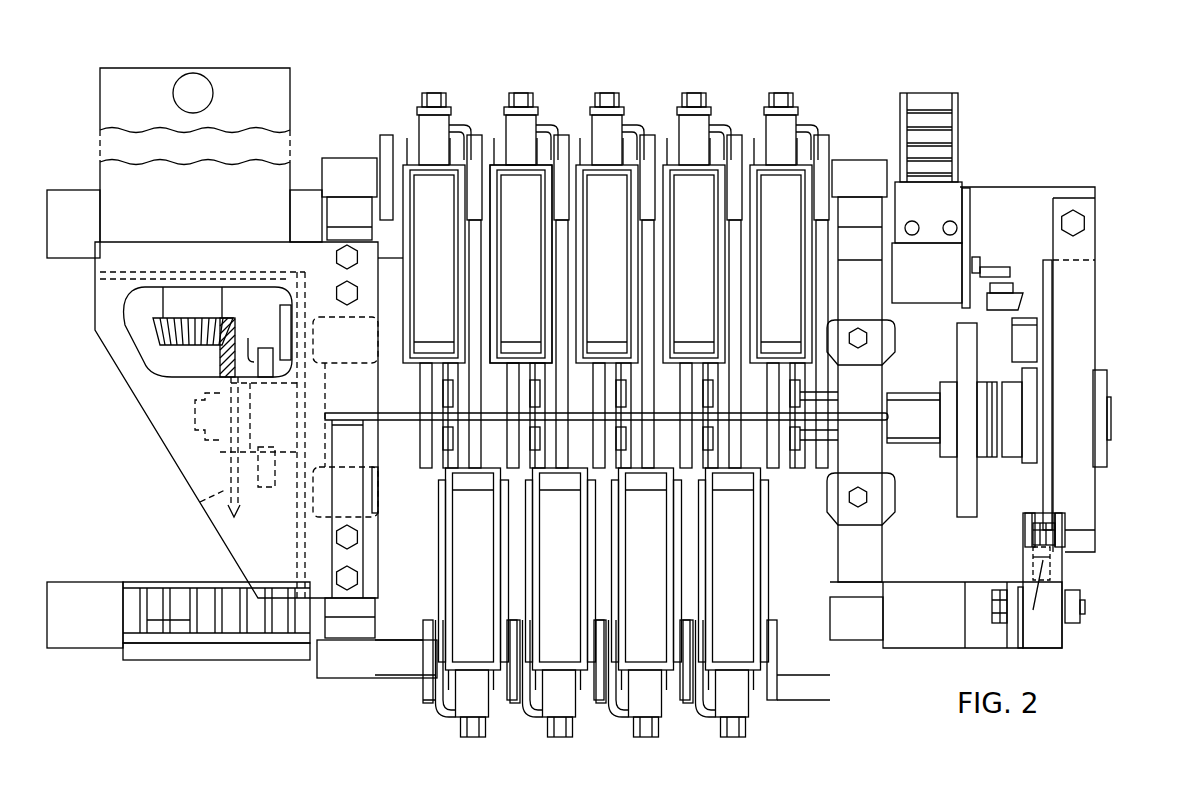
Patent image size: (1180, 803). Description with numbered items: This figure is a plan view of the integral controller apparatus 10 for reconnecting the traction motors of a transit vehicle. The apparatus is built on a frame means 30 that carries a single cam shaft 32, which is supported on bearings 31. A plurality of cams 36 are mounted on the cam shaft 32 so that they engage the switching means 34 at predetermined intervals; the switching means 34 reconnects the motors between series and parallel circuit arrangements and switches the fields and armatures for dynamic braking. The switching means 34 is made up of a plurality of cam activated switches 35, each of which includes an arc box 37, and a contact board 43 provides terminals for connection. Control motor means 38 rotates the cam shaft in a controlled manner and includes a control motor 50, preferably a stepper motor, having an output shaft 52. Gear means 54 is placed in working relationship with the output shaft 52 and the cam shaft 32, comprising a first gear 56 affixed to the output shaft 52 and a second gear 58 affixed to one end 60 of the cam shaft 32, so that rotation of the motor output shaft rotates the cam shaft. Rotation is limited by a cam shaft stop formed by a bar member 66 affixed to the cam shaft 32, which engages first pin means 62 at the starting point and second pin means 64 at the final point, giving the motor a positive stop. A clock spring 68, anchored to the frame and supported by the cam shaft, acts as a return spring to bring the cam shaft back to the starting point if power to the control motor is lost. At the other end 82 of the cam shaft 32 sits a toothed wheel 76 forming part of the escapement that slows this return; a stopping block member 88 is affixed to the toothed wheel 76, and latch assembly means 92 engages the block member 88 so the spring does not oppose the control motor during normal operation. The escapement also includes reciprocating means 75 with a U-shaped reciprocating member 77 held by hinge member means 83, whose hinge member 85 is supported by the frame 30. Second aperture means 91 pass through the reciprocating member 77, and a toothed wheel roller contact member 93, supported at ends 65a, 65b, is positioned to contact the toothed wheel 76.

The controller apparatus 10 is at (1165, 423).
The frame means 30 is at (886, 554).
The bearings 31 is at (890, 378).
The cam shaft 32 is at (908, 398).
The switching means 34 is at (535, 132).
The cam activated switches 35 is at (402, 135).
The cams 36 is at (425, 503).
The arc box 37 is at (543, 168).
The control motor means 38 is at (306, 108).
The contact board 43 is at (825, 148).
The control motor 50 is at (100, 108).
The output shaft 52 is at (212, 300).
The gear means 54 is at (155, 338).
The first gear 56 is at (204, 340).
The second gear 58 is at (200, 503).
The one end of the cam shaft 60 is at (216, 450).
The first pin means 62 is at (260, 349).
The second pin means 64 is at (264, 491).
The end 65a is at (1031, 512).
The end 65b is at (1059, 512).
The bar member 66 is at (288, 295).
The clock spring 68 is at (1093, 316).
The reciprocating means 75 is at (1058, 580).
The toothed wheel 76 is at (1020, 282).
The reciprocating member 77 is at (1065, 557).
The other end of the cam shaft 82 is at (1110, 400).
The hinge member means 83 is at (1081, 623).
The hinge member 85 is at (1081, 606).
The stopping block member 88 is at (1035, 300).
The second aperture means 91 is at (1065, 530).
The latch assembly means 92 is at (962, 177).
The toothed wheel roller contact member 93 is at (1042, 599).